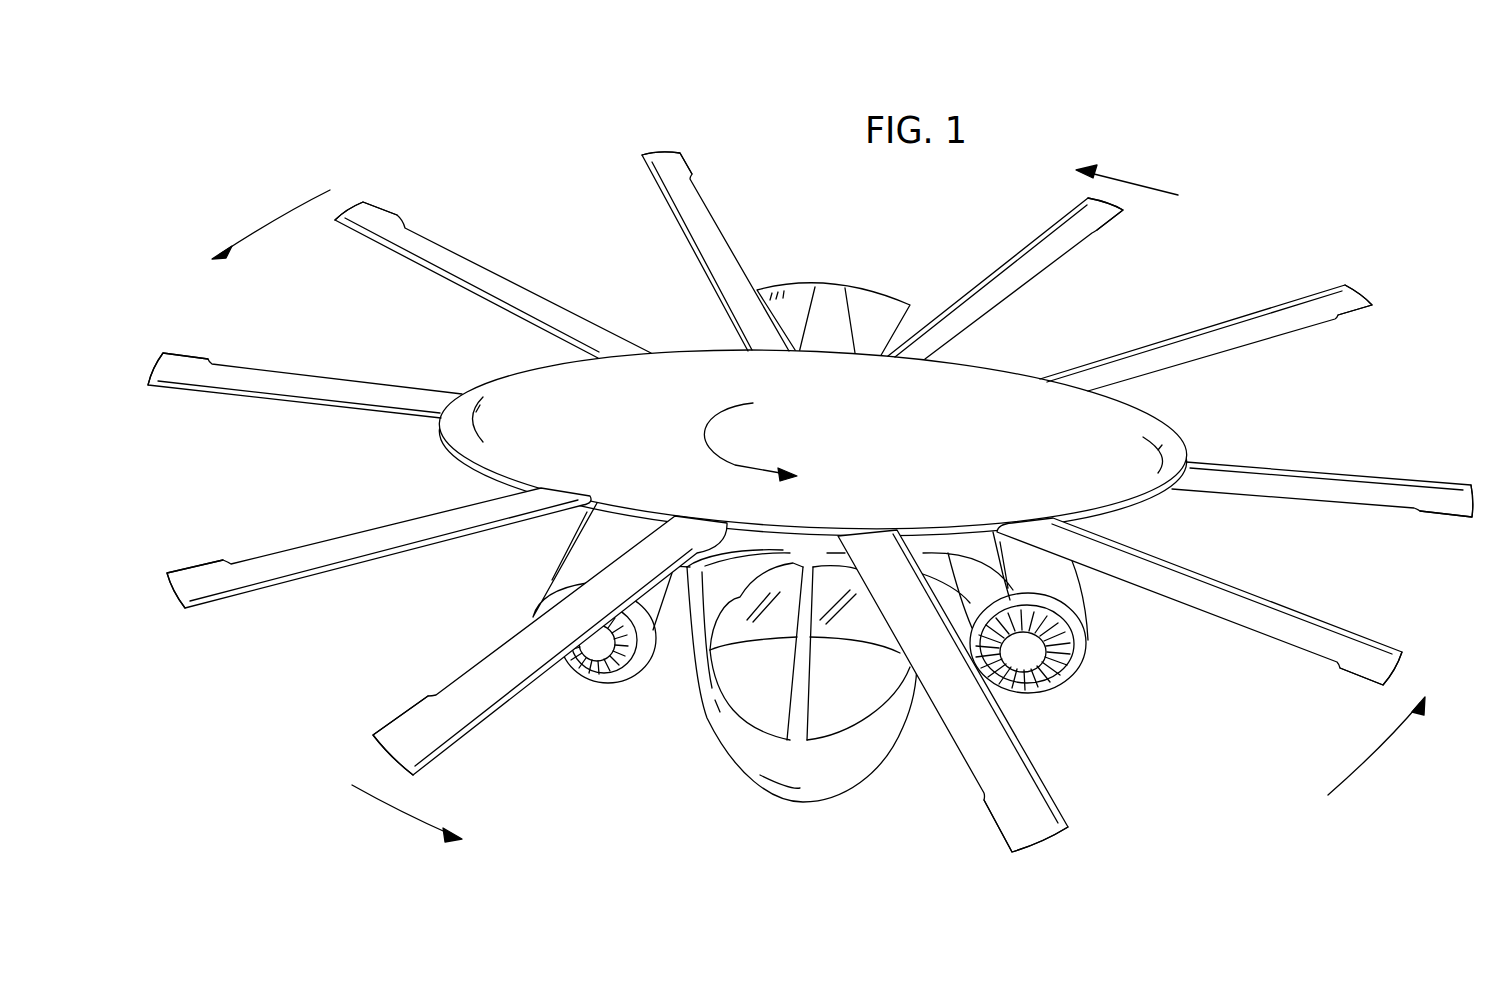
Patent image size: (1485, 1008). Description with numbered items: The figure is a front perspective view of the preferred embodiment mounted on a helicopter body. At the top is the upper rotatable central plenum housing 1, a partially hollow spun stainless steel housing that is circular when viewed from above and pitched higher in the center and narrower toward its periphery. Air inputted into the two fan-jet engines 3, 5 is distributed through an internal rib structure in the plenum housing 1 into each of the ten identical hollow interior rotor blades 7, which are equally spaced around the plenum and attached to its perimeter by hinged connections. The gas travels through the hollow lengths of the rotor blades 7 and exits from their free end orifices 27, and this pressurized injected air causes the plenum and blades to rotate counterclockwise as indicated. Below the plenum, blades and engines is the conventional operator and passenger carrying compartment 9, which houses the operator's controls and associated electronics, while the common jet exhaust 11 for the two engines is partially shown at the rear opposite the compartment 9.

The upper rotatable central plenum housing 1 is at (830, 442).
The fan-jet engine 3 is at (573, 560).
The fan-jet engine 5 is at (1065, 595).
The hollow interior rotor blade 7 is at (557, 315).
The operator and passenger carrying compartment 9 is at (740, 750).
The common jet exhaust 11 is at (860, 287).
The free end orifice 27 is at (399, 216).